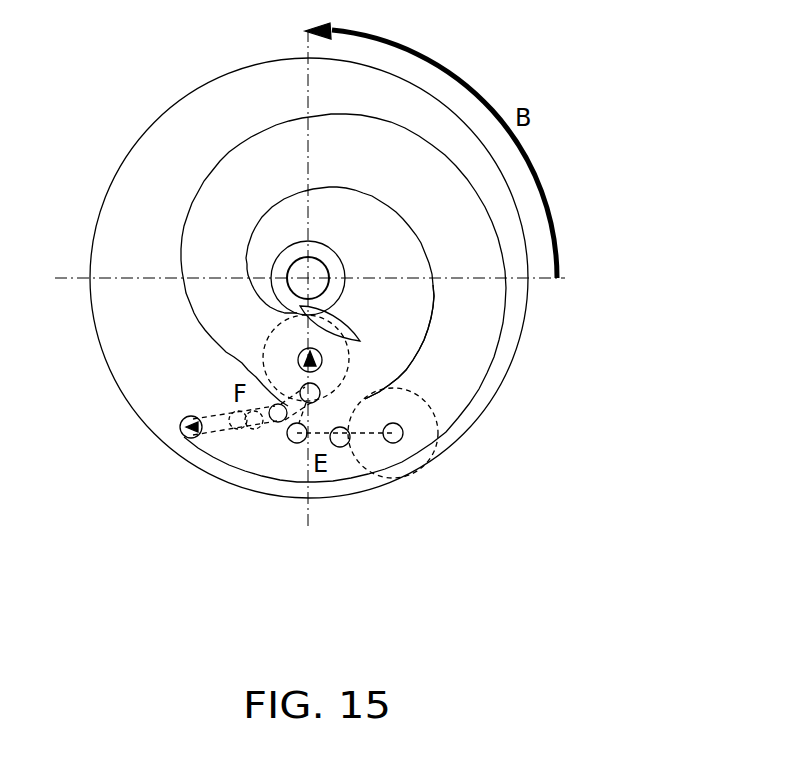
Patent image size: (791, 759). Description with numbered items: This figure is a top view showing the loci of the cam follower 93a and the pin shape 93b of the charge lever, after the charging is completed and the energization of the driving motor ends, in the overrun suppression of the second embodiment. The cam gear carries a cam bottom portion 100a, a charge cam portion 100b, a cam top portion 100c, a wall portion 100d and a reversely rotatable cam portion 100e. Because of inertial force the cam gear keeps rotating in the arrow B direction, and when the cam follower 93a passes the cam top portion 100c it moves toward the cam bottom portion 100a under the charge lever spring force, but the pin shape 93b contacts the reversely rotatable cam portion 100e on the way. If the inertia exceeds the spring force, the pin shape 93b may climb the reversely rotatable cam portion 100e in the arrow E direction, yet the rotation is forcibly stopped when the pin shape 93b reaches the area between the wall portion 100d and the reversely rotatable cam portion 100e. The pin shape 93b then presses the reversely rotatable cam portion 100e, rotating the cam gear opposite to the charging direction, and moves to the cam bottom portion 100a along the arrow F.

The cam bottom portion 100a is at (355, 339).
The charge cam portion 100b is at (282, 203).
The cam top portion 100c is at (400, 375).
The wall portion 100d is at (280, 480).
The reversely rotatable cam portion 100e is at (250, 418).
The cam follower 93a is at (400, 375).
The pin shape 93b is at (405, 436).